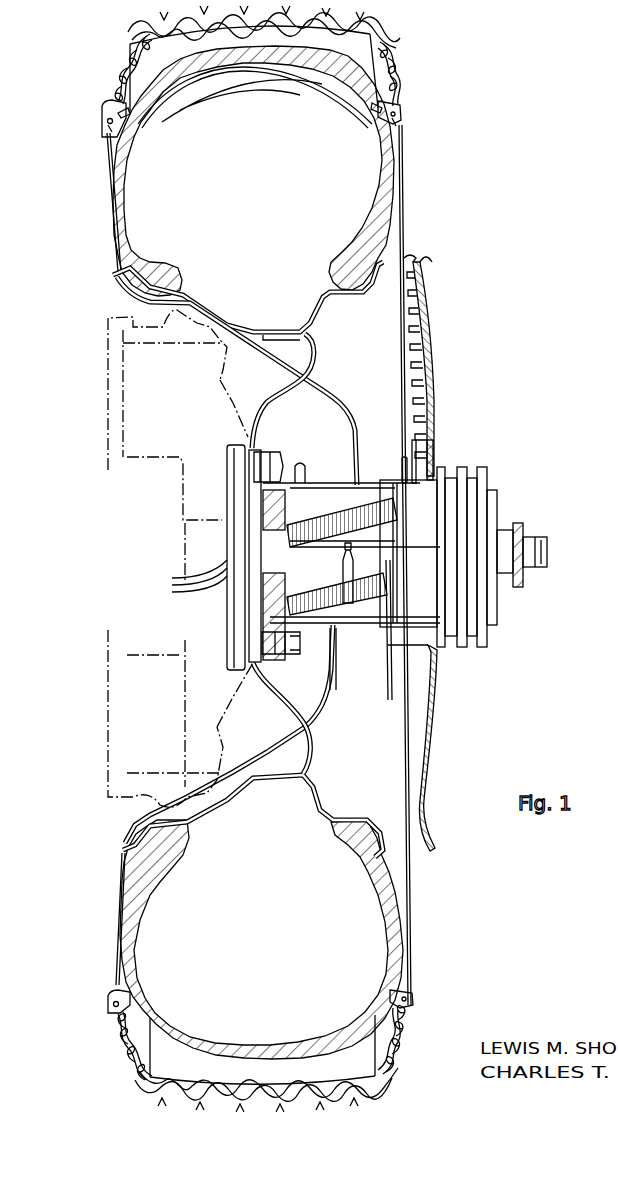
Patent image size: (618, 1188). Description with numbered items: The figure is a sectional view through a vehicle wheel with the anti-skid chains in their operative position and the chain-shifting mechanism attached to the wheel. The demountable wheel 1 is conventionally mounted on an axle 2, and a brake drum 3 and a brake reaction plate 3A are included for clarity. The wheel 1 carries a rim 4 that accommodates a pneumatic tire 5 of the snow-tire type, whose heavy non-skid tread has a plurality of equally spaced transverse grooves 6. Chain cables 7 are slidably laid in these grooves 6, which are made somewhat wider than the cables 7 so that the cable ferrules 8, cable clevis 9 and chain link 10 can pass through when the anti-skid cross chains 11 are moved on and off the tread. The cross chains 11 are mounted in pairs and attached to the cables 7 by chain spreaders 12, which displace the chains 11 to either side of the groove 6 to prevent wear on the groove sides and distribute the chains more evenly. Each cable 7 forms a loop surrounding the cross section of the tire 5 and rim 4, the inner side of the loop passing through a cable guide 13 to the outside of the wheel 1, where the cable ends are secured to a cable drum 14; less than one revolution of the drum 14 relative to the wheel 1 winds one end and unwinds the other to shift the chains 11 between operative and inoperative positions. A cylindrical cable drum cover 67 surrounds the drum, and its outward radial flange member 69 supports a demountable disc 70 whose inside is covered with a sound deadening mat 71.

The demountable wheel 1 is at (283, 405).
The axle 2 is at (197, 597).
The brake drum 3 is at (232, 410).
The brake reaction plate 3A is at (106, 366).
The rim 4 is at (307, 307).
The pneumatic tire 5 is at (336, 264).
The transverse grooves 6 is at (345, 52).
The chain cables 7 is at (110, 237).
The cable ferrules 8 is at (123, 112).
The cable clevis 9 is at (104, 125).
The chain link 10 is at (108, 105).
The anti-skid cross chains 11 is at (128, 40).
The chain spreaders 12 is at (125, 82).
The cable guide 13 is at (347, 420).
The cable drum 14 is at (295, 605).
The cable drum cover 67 is at (332, 480).
The radial flange member 69 is at (410, 660).
The demountable disc 70 is at (426, 330).
The sound deadening mat 71 is at (410, 368).